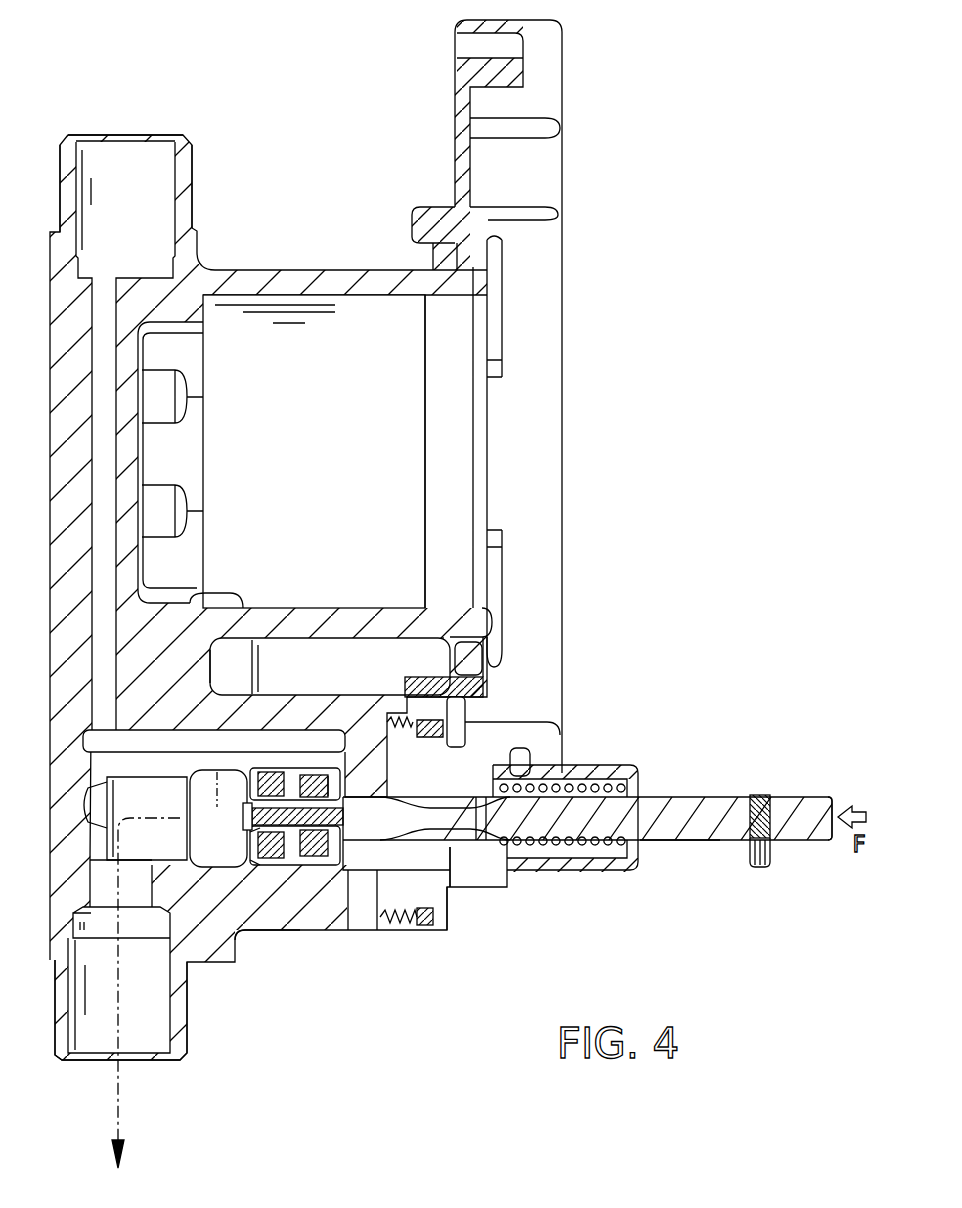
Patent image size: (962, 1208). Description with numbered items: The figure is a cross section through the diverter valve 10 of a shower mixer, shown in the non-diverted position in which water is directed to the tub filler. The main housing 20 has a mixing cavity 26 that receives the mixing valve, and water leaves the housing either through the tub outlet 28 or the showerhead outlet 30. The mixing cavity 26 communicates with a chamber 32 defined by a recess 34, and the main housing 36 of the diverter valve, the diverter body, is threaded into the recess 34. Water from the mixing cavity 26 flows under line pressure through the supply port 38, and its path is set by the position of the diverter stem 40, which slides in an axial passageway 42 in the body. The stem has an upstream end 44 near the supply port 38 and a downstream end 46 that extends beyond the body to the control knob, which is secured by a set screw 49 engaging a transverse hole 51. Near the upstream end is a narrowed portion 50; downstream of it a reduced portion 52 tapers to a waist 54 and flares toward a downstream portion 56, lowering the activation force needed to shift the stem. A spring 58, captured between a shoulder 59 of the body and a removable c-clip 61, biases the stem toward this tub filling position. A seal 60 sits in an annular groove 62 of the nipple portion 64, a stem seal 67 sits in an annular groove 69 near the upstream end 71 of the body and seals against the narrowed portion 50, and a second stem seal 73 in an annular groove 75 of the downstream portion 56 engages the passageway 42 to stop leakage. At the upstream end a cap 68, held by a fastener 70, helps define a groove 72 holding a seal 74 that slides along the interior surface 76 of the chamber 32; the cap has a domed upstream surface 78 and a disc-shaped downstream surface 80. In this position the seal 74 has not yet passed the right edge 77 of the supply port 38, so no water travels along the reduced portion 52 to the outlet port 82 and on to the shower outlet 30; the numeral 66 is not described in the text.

The diverter valve 10 is at (619, 720).
The main housing 20 is at (50, 434).
The mixing cavity 26 is at (337, 486).
The outlet 28 is at (148, 1062).
The outlet 30 is at (128, 134).
The chamber 32 is at (272, 932).
The recess 34 is at (197, 872).
The main housing of the diverter valve 36 is at (479, 890).
The supply port 38 is at (224, 851).
The diverter stem 40 is at (700, 798).
The axial passageway 42 is at (462, 775).
The upstream end 44 is at (298, 865).
The downstream end 46 is at (830, 797).
The set screw 49 is at (771, 858).
The narrowed portion 50 is at (312, 790).
The transverse hole 51 is at (756, 828).
The reduced portion 52 is at (428, 800).
The waist 54 is at (452, 888).
The portion located downstream 56 is at (676, 841).
The spring 58 is at (560, 849).
The shoulder 59 is at (512, 760).
The seal 60 is at (330, 790).
The removable c-clip 61 is at (637, 781).
The annular groove 62 is at (365, 790).
The nipple portion 64 is at (396, 875).
The spring seat 66 is at (418, 905).
The stem seal 67 is at (323, 787).
The cap 68 is at (197, 754).
The annular groove 69 is at (338, 878).
The fastener 70 is at (187, 836).
The upstream end 71 is at (308, 697).
The groove 72 is at (245, 878).
The stem seal 73 is at (460, 848).
The seal 74 is at (255, 778).
The annular groove 75 is at (478, 830).
The interior surface 76 is at (272, 858).
The right edge 77 is at (245, 880).
The domed upstream surface 78 is at (187, 805).
The disc-shaped downstream surface 80 is at (367, 877).
The outlet port 82 is at (394, 797).